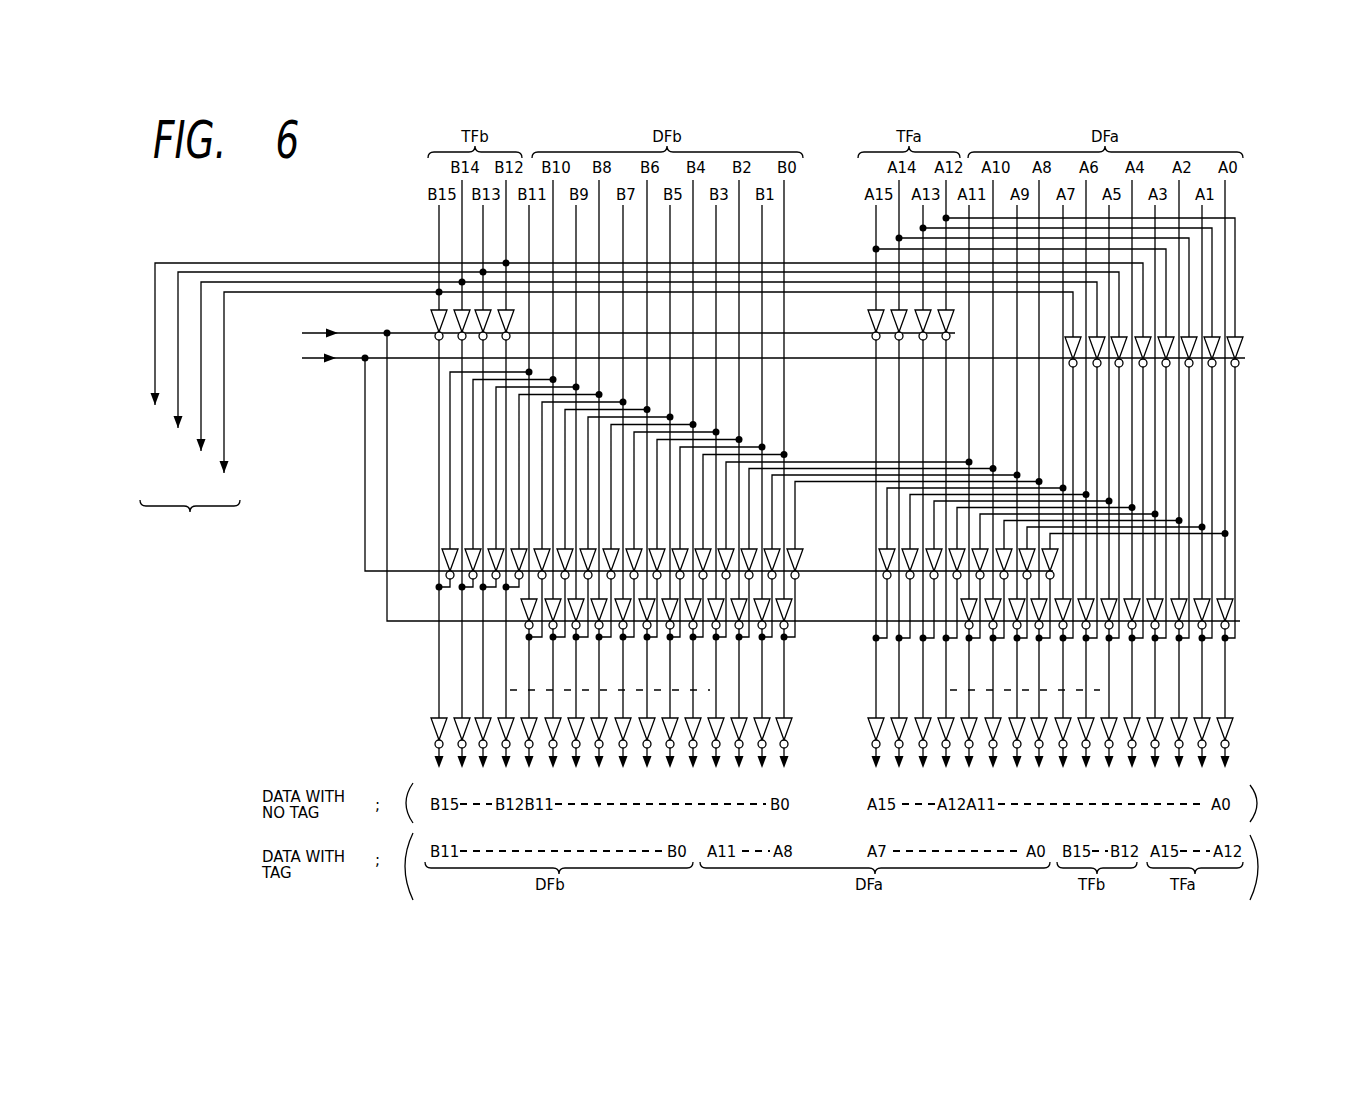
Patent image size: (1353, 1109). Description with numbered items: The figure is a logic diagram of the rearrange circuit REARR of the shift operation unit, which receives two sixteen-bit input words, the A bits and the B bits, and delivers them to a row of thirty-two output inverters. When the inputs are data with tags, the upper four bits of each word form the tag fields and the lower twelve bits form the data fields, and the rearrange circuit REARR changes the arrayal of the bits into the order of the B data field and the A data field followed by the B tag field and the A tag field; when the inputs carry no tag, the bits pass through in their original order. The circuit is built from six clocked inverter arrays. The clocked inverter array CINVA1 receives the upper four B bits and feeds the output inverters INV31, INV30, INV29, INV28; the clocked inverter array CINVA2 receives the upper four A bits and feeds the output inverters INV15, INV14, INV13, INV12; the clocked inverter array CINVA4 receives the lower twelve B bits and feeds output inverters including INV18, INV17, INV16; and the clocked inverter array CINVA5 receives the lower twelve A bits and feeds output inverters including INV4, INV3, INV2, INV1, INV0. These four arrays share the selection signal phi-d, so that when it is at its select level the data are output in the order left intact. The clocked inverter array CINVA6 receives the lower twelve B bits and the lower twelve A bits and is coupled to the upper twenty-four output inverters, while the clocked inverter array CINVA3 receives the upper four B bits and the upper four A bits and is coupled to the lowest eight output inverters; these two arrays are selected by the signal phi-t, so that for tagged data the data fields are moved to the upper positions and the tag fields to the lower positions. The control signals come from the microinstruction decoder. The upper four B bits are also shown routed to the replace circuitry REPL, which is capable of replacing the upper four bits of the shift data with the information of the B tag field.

The rearrange circuit REARR is at (398, 232).
The replace circuitry REPL is at (641, 415).
The clocked inverter array CINVA1 is at (413, 312).
The clocked inverter array CINVA2 is at (855, 300).
The clocked inverter array CINVA3 is at (1256, 348).
The clocked inverter array CINVA4 is at (805, 609).
The clocked inverter array CINVA5 is at (1250, 617).
The clocked inverter array CINVA6 is at (852, 538).
The output inverter INV31 is at (434, 717).
The output inverter INV30 is at (457, 717).
The output inverter INV29 is at (478, 717).
The output inverter INV28 is at (501, 717).
The output inverter INV18 is at (711, 717).
The output inverter INV17 is at (734, 717).
The output inverter INV16 is at (757, 717).
The output inverter INV15 is at (871, 717).
The output inverter INV14 is at (894, 717).
The output inverter INV13 is at (918, 717).
The output inverter INV12 is at (941, 717).
The output inverter INV4 is at (1127, 722).
The output inverter INV3 is at (1150, 722).
The output inverter INV2 is at (1174, 722).
The output inverter INV1 is at (1197, 722).
The output inverter INV0 is at (1220, 722).